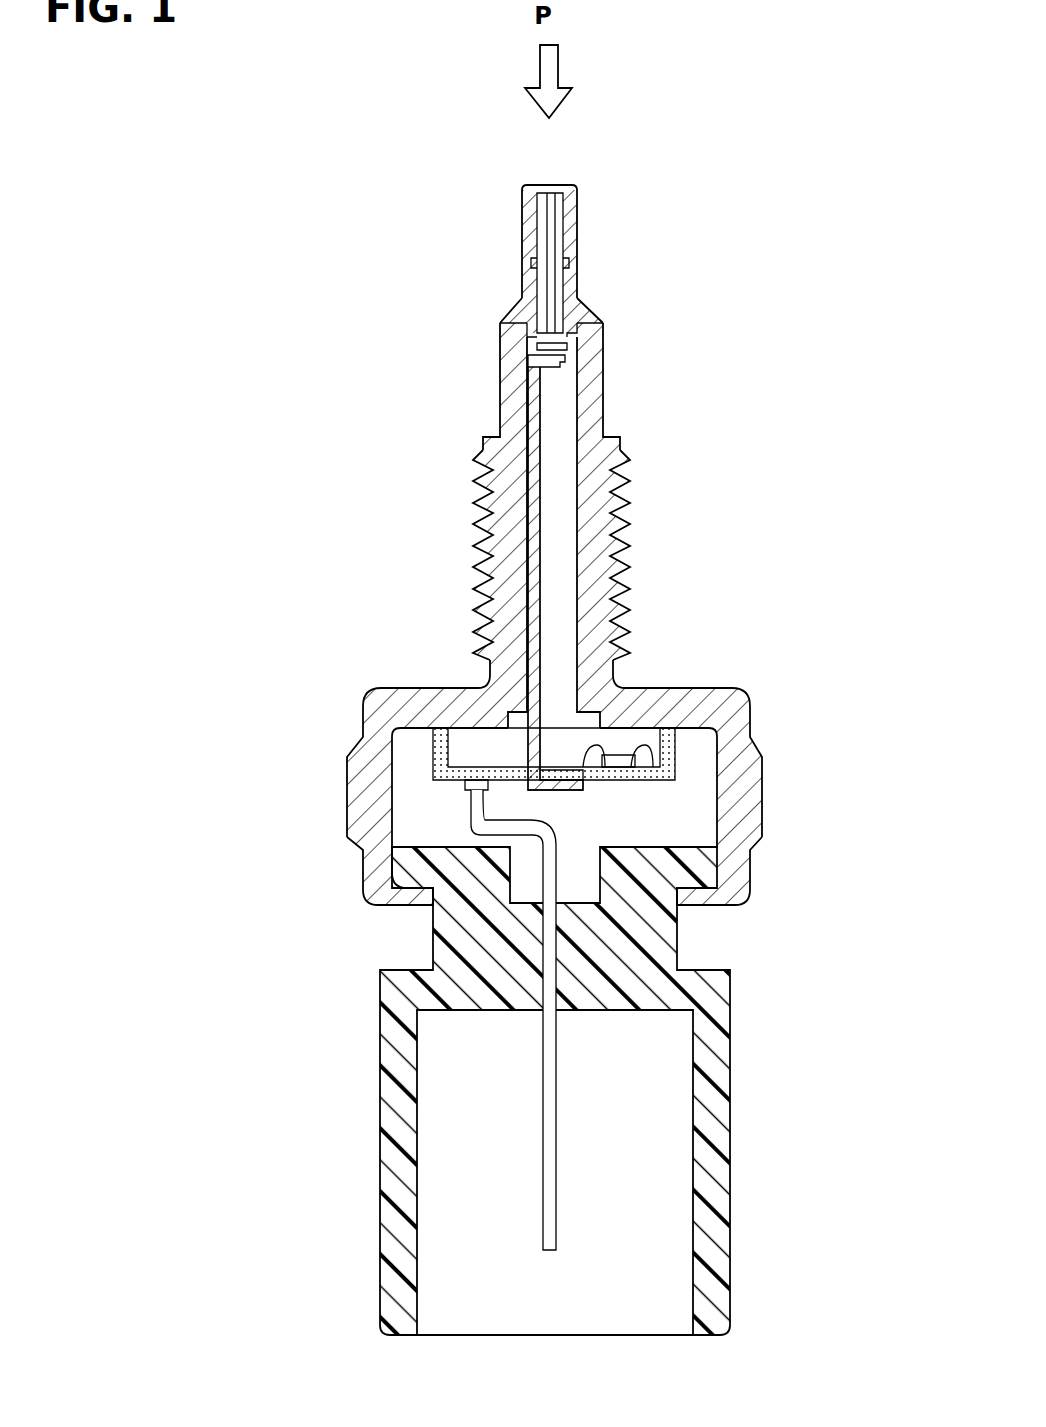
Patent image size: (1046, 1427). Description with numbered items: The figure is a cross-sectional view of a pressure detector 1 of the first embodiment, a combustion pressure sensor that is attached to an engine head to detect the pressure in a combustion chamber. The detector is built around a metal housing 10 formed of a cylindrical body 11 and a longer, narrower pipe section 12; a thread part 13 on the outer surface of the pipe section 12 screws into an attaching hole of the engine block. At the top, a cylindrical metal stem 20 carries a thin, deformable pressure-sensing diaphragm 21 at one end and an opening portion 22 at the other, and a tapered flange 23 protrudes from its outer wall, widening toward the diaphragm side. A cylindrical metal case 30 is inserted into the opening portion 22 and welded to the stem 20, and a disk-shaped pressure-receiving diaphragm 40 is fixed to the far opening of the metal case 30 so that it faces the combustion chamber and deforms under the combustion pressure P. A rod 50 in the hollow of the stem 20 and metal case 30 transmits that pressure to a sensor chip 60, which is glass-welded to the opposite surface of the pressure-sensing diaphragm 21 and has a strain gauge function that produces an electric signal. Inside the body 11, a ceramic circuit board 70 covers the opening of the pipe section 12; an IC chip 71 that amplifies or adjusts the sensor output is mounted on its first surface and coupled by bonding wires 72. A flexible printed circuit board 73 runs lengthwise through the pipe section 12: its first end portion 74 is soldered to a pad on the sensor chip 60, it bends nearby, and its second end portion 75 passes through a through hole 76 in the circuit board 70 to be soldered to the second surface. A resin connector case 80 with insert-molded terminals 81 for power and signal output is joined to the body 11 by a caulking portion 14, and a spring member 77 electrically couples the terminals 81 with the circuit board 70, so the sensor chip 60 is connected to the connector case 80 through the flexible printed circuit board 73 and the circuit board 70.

The pressure detector 1 is at (328, 173).
The housing 10 is at (745, 702).
The body 11 is at (388, 735).
The pipe section 12 is at (508, 390).
The thread part 13 is at (478, 490).
The caulking portion 14 is at (368, 893).
The stem 20 is at (520, 290).
The pressure-sensing diaphragm 21 is at (505, 332).
The opening portion 22 is at (519, 270).
The flange 23 is at (513, 303).
The metal case 30 is at (570, 218).
The pressure-receiving diaphragm 40 is at (555, 185).
The rod 50 is at (548, 245).
The sensor chip 60 is at (555, 350).
The circuit board 70 is at (435, 750).
The IC chip 71 is at (615, 750).
The bonding wires 72 is at (620, 738).
The flexible printed circuit board 73 is at (530, 407).
The first end portion 74 is at (558, 365).
The second end portion 75 is at (555, 790).
The through hole 76 is at (520, 765).
The spring member 77 is at (475, 790).
The connector case 80 is at (730, 1108).
The terminals 81 is at (550, 1215).